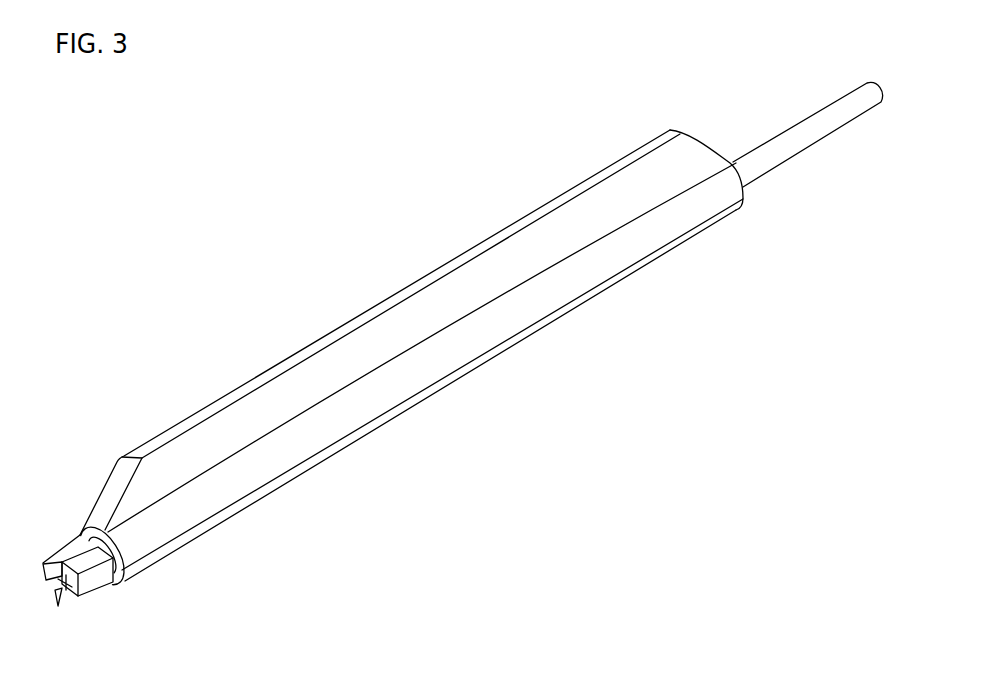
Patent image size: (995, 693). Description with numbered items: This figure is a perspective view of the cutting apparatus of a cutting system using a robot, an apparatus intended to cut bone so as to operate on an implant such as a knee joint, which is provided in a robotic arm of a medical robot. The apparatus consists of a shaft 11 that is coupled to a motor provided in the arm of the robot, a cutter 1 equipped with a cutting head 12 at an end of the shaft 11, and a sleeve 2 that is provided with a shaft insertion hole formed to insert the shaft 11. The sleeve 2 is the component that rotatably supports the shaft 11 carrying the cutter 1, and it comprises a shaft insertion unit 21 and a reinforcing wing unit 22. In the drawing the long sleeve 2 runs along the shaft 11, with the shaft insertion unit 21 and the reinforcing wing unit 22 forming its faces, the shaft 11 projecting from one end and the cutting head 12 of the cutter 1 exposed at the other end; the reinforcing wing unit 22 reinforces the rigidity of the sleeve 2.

The cutter 1 is at (113, 587).
The sleeve 2 is at (403, 287).
The shaft 11 is at (818, 133).
The cutting head 12 is at (90, 590).
The shaft insertion unit 21 is at (235, 505).
The reinforcing wing unit 22 is at (510, 252).